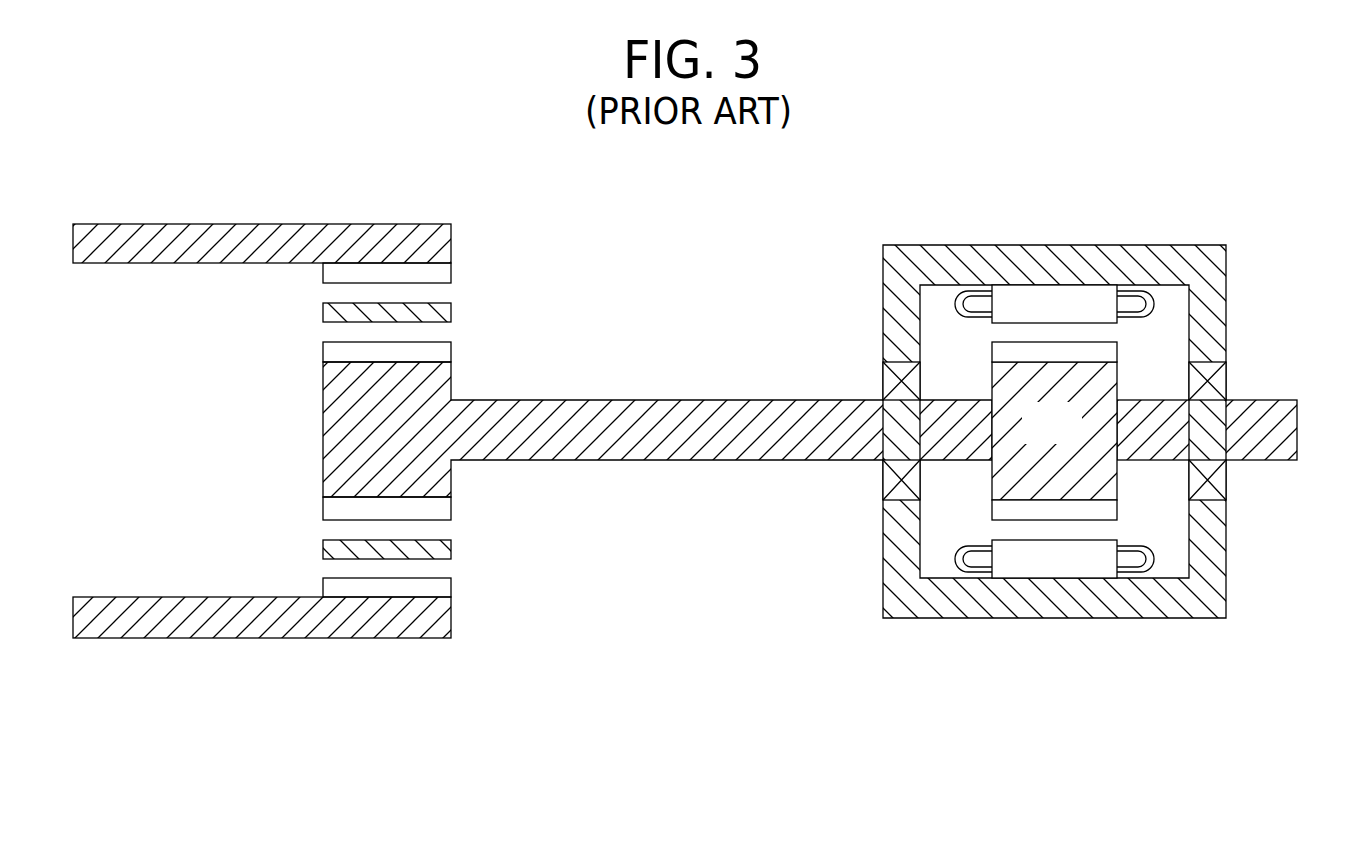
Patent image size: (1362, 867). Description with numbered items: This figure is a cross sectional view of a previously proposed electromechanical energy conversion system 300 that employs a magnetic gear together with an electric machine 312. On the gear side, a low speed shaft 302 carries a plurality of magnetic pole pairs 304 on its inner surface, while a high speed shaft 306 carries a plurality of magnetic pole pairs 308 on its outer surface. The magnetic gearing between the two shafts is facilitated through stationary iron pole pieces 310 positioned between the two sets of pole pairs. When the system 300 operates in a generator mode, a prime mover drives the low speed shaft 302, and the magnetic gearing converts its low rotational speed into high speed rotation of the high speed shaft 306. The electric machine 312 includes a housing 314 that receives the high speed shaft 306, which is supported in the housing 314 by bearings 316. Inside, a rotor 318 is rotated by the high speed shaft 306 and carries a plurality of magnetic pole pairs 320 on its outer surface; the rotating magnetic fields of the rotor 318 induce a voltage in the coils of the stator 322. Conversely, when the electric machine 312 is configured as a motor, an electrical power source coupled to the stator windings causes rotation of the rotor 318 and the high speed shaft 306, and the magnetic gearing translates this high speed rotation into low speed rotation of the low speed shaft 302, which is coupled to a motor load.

The electromechanical energy conversion system 300 is at (113, 152).
The low speed shaft 302 is at (342, 230).
The magnetic pole pairs 304 is at (447, 271).
The high speed shaft 306 is at (673, 400).
The magnetic pole pairs 308 is at (326, 350).
The stationary iron pole pieces 310 is at (447, 310).
The electric machine 312 is at (1075, 424).
The housing 314 is at (1143, 258).
The bearings 316 is at (885, 380).
The rotor 318 is at (1070, 438).
The magnetic pole pairs 320 is at (994, 348).
The stator 322 is at (1055, 310).